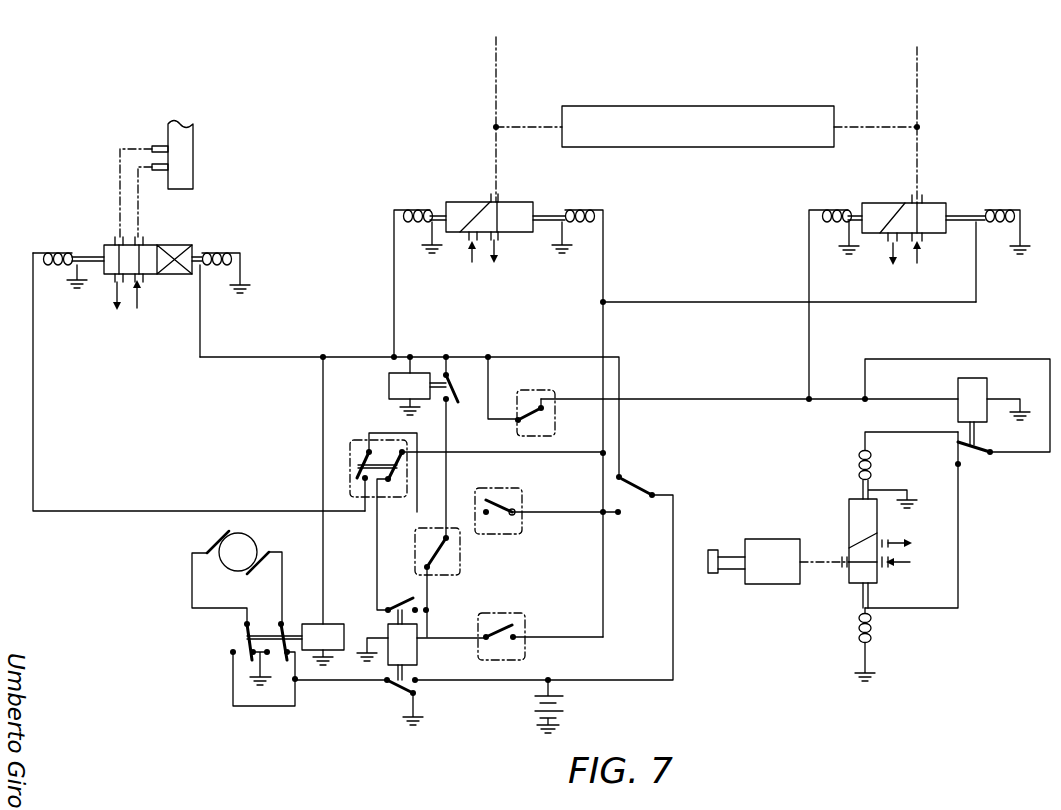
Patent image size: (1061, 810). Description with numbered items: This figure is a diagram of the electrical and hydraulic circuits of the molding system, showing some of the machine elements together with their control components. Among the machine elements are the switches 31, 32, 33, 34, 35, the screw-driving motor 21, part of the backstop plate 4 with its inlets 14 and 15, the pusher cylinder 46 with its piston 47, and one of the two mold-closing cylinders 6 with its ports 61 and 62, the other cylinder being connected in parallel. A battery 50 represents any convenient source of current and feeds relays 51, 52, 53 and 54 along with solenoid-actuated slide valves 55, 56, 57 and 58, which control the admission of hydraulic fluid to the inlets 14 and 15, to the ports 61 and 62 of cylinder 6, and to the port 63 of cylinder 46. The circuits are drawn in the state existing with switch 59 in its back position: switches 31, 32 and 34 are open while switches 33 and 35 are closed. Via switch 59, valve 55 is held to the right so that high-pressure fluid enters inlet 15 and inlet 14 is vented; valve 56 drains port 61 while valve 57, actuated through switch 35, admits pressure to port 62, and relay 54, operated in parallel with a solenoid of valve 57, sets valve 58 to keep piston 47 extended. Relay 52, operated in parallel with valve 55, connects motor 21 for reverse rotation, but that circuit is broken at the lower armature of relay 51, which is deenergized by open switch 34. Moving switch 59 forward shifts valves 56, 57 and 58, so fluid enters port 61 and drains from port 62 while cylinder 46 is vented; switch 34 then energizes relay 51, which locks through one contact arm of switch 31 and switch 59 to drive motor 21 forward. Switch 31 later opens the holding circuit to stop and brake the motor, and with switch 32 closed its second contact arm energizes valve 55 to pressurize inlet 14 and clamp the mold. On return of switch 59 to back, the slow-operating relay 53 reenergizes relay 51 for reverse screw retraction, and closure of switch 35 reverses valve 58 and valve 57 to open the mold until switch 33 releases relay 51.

The backstop plate 4 is at (180, 130).
The mold-closing cylinder 6 is at (722, 106).
The inlet 14 is at (145, 147).
The inlet 15 is at (148, 168).
The motor 21 is at (247, 546).
The microsensitive switch 31 is at (357, 440).
The microsensitive switch 32 is at (515, 520).
The microsensitive switch 33 is at (460, 565).
The switch 34 is at (523, 615).
The switch 35 is at (537, 390).
The pusher cylinder 46 is at (776, 539).
The piston 47 is at (713, 573).
The battery 50 is at (570, 705).
The relay 51 is at (417, 650).
The relay 52 is at (327, 623).
The slow-operating relay 53 is at (389, 383).
The relay 54 is at (983, 385).
The solenoid-actuated slide valve 55 is at (192, 243).
The solenoid-actuated slide valve 56 is at (528, 201).
The solenoid-actuated slide valve 57 is at (935, 203).
The solenoid-actuated slide valve 58 is at (855, 499).
The switch 59 is at (640, 485).
The port 61 is at (556, 127).
The port 62 is at (840, 125).
The port 63 is at (800, 562).